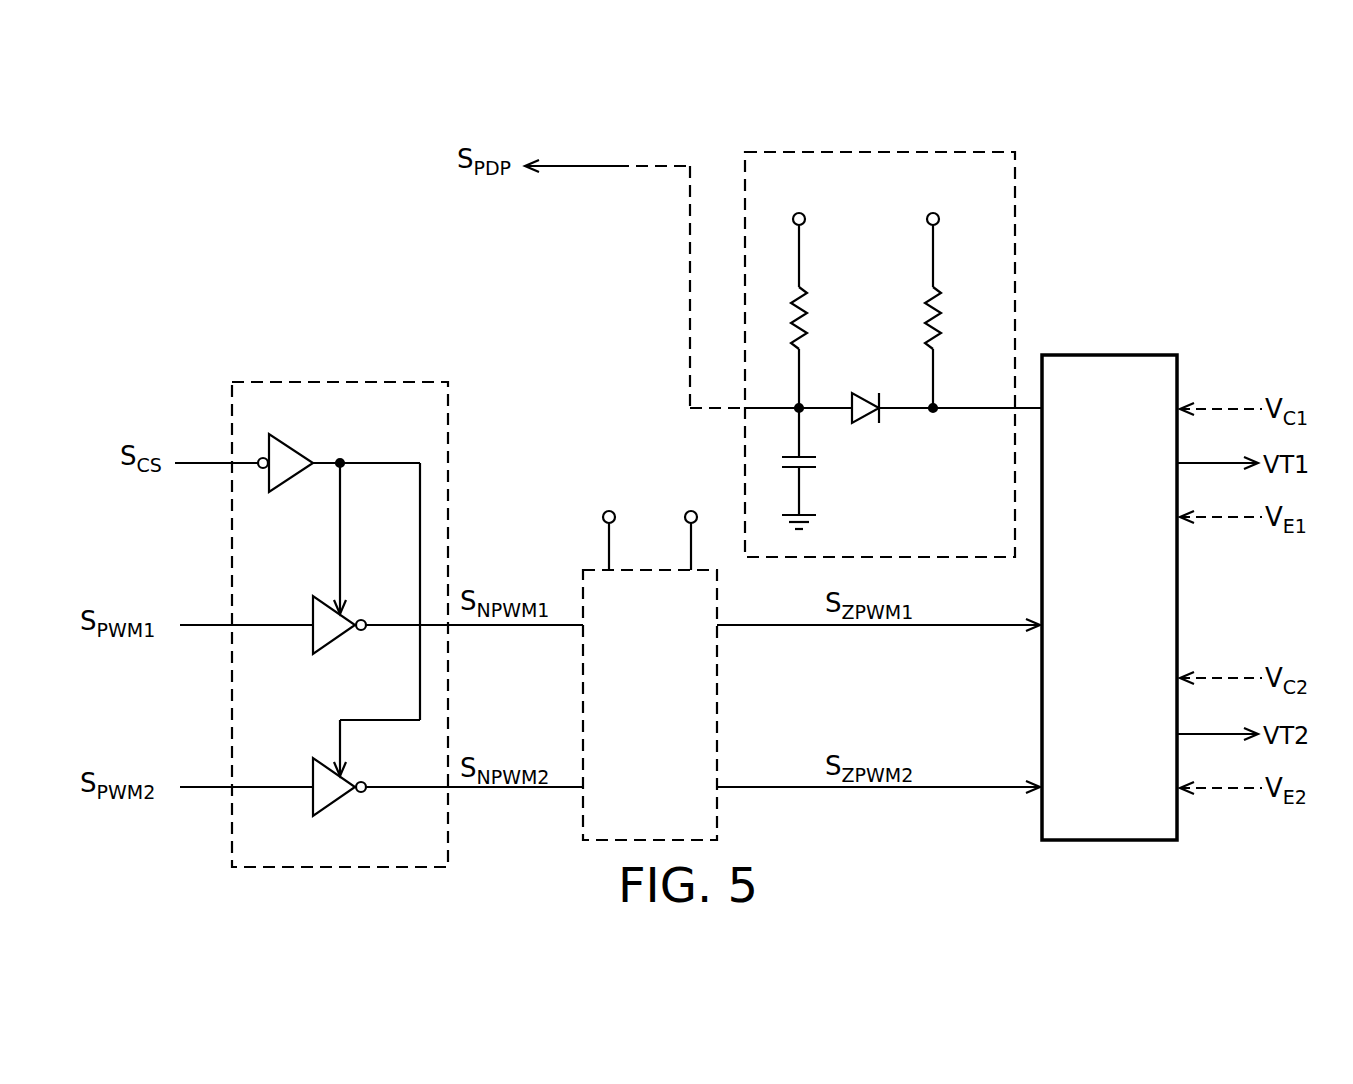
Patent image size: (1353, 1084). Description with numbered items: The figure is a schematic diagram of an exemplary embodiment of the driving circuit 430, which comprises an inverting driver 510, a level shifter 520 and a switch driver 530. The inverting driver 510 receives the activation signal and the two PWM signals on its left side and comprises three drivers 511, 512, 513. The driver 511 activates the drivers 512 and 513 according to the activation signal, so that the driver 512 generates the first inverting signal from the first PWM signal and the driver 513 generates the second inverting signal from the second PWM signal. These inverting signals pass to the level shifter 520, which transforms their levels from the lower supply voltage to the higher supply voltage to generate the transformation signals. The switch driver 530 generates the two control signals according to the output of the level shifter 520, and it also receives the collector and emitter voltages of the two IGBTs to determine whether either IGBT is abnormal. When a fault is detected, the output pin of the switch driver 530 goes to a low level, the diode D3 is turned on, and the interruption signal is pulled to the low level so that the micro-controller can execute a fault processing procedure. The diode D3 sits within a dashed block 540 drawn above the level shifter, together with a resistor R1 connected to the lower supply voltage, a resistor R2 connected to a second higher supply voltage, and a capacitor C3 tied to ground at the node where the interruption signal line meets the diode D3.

The driving circuit 430 is at (1204, 192).
The inverting driver 510 is at (340, 382).
The driver 511 is at (295, 446).
The driver 512 is at (336, 640).
The driver 513 is at (336, 802).
The level shifter 520 is at (653, 660).
The switch driver 530 is at (1109, 597).
The power supply circuit 540 is at (880, 152).
The resistor R1 is at (812, 320).
The resistor R2 is at (946, 320).
The capacitor C3 is at (820, 464).
The diode D3 is at (870, 393).